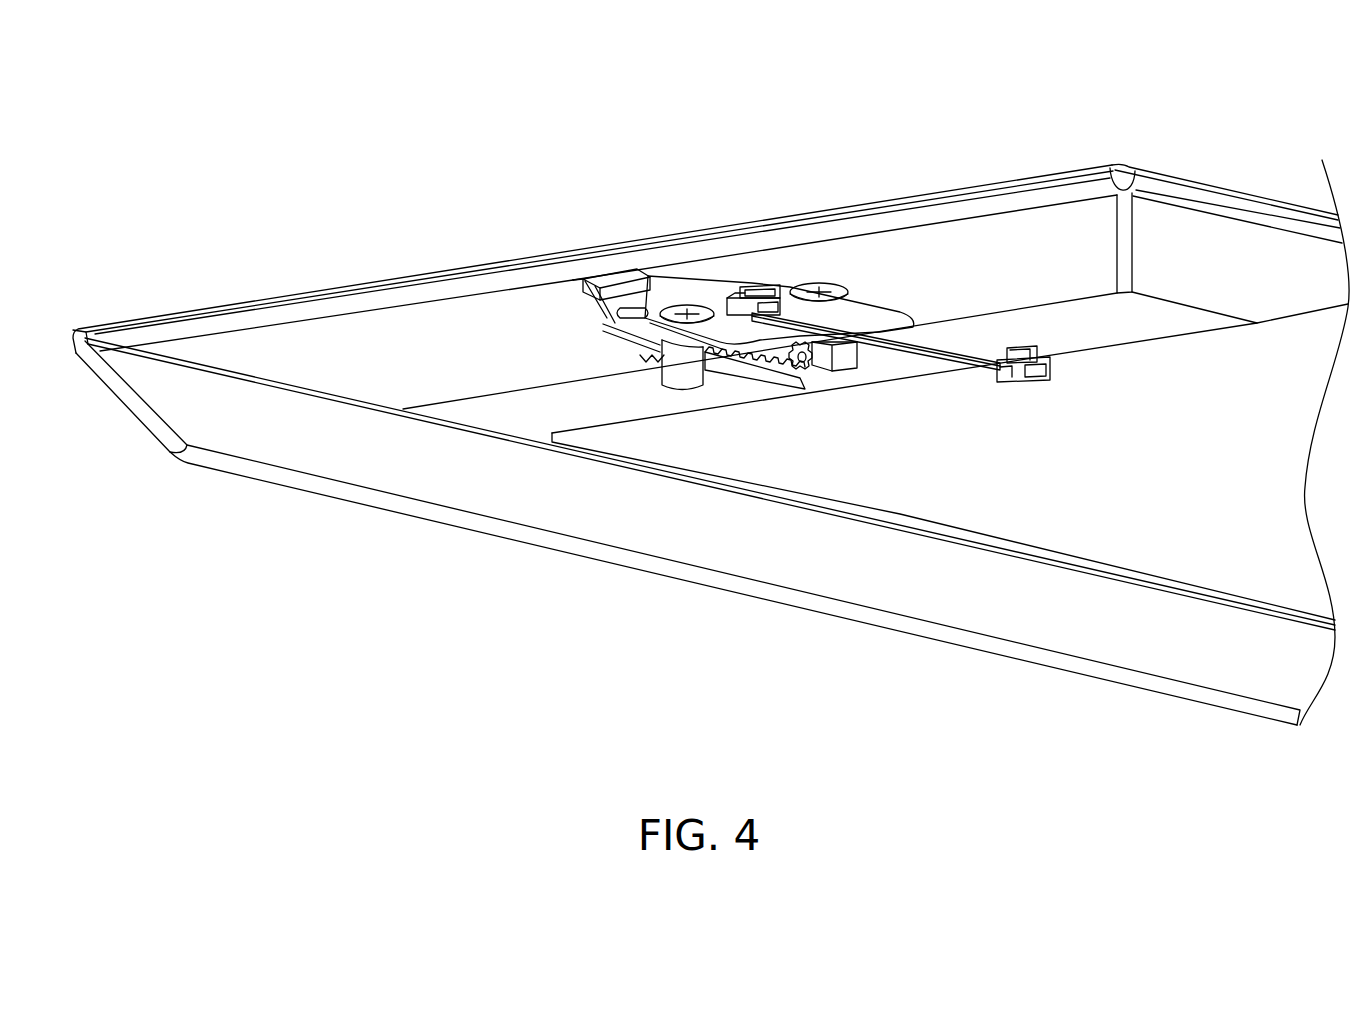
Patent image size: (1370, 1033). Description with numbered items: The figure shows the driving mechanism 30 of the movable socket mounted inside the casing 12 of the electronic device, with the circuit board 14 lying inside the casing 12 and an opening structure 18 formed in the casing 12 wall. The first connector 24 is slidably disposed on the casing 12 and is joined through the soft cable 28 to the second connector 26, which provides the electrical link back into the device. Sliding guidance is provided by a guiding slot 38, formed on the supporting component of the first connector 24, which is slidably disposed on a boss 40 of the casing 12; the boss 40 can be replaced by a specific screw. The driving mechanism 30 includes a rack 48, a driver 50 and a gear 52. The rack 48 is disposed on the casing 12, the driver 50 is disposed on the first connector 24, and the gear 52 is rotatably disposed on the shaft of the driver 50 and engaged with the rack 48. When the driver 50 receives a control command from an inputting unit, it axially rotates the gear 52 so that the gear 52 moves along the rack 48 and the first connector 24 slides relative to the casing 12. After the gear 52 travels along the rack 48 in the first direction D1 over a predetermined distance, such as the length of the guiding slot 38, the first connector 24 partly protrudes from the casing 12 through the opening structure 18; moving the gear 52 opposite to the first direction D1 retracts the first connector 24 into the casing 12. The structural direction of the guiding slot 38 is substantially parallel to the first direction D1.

The casing 12 is at (505, 410).
The circuit board 14 is at (1200, 488).
The opening structure 18 is at (647, 347).
The first connector 24 is at (868, 313).
The second connector 26 is at (1030, 345).
The soft cable 28 is at (950, 355).
The driving mechanism 30 is at (773, 530).
The guiding slot 38 is at (628, 315).
The boss 40 is at (677, 378).
The rack 48 is at (726, 368).
The driver 50 is at (840, 358).
The gear 52 is at (787, 357).
The first direction D1 is at (1158, 158).